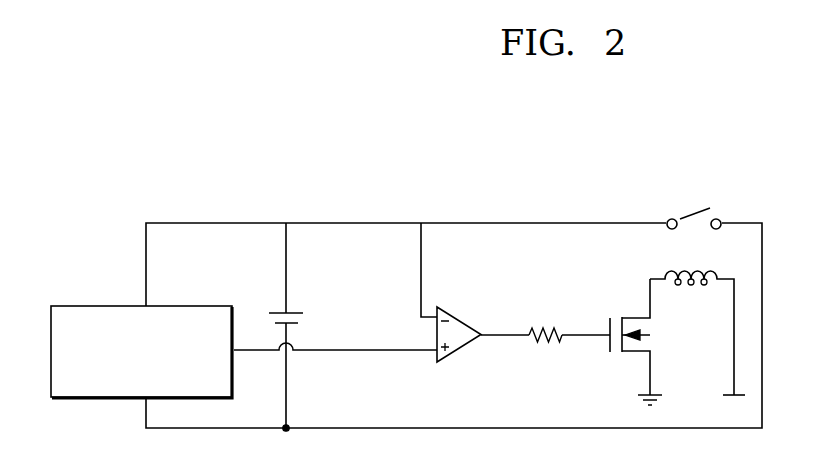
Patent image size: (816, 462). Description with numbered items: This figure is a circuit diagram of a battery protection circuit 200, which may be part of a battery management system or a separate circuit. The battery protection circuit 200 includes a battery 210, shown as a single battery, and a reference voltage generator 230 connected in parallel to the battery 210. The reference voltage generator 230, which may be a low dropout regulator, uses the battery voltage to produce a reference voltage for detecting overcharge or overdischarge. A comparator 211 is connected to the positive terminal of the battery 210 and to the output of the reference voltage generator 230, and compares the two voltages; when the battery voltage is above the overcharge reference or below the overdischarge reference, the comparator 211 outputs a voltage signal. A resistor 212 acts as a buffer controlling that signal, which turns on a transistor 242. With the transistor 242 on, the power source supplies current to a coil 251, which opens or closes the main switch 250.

The battery protection circuit 200 is at (586, 138).
The battery 210 is at (298, 313).
The comparator 211 is at (455, 311).
The resistor 212 is at (548, 321).
The reference voltage generator 230 is at (173, 304).
The transistor 242 is at (629, 342).
The main switch 250 is at (694, 206).
The coil 251 is at (701, 348).